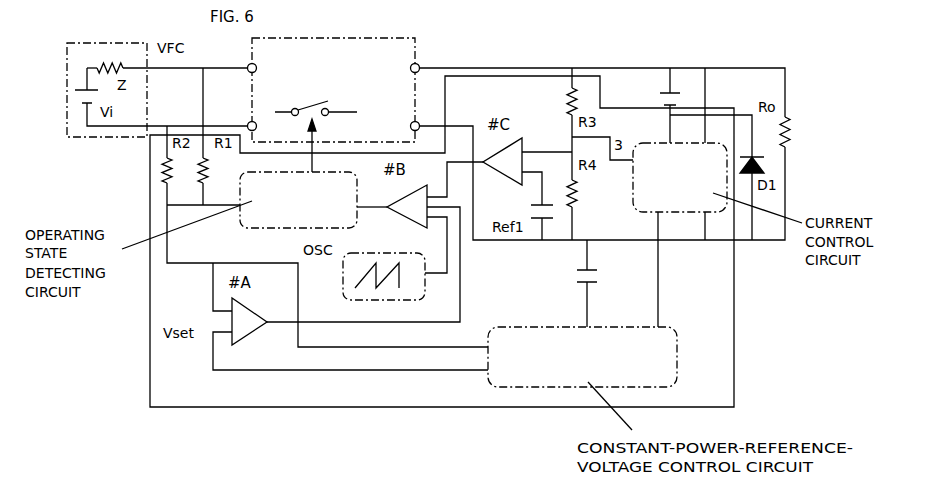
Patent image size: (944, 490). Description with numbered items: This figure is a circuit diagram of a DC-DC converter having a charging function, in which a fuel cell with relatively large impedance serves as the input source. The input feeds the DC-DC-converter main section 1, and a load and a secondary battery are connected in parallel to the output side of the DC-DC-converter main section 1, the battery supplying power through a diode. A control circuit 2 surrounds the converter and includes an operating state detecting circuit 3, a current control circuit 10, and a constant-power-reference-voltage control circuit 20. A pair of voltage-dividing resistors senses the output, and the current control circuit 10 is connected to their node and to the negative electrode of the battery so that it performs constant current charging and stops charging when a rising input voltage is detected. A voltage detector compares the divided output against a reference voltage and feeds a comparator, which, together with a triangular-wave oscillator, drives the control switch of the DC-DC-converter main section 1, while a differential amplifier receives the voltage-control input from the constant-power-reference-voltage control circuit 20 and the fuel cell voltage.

The DC-DC-converter main section 1 is at (388, 125).
The control circuit 2 is at (720, 405).
The operating state detecting circuit 3 is at (240, 218).
The current control circuit 10 is at (647, 189).
The constant-power-reference-voltage control circuit 20 is at (516, 380).